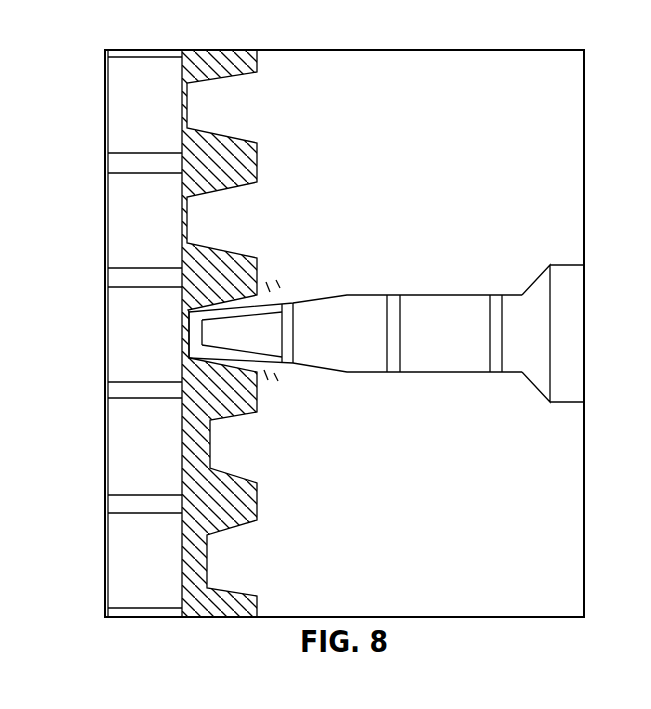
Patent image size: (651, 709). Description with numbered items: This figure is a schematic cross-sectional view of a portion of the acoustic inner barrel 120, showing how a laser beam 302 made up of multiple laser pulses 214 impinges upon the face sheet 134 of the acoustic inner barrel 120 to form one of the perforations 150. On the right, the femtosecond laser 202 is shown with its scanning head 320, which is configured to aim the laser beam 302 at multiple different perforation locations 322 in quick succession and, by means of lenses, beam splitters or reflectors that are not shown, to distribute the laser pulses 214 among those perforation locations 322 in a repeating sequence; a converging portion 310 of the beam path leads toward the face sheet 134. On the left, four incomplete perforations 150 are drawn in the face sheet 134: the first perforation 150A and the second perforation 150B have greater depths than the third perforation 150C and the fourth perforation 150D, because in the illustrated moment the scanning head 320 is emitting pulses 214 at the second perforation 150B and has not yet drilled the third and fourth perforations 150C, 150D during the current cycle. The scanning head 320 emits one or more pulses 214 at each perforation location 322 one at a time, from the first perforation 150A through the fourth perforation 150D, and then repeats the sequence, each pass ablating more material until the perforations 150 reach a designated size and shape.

The acoustic inner barrel 120 is at (183, 47).
The face sheet 134 is at (217, 60).
The perforations 150 is at (196, 222).
The first perforation 150A is at (223, 210).
The second perforation 150B is at (229, 311).
The third perforation 150C is at (223, 447).
The fourth perforation 150D is at (223, 550).
The perforation locations 322 is at (229, 231).
The laser beam 302 is at (355, 344).
The converging section 310 is at (387, 383).
The laser pulses 214 is at (393, 372).
The scanning head 320 is at (538, 290).
The femtosecond laser 202 is at (570, 265).